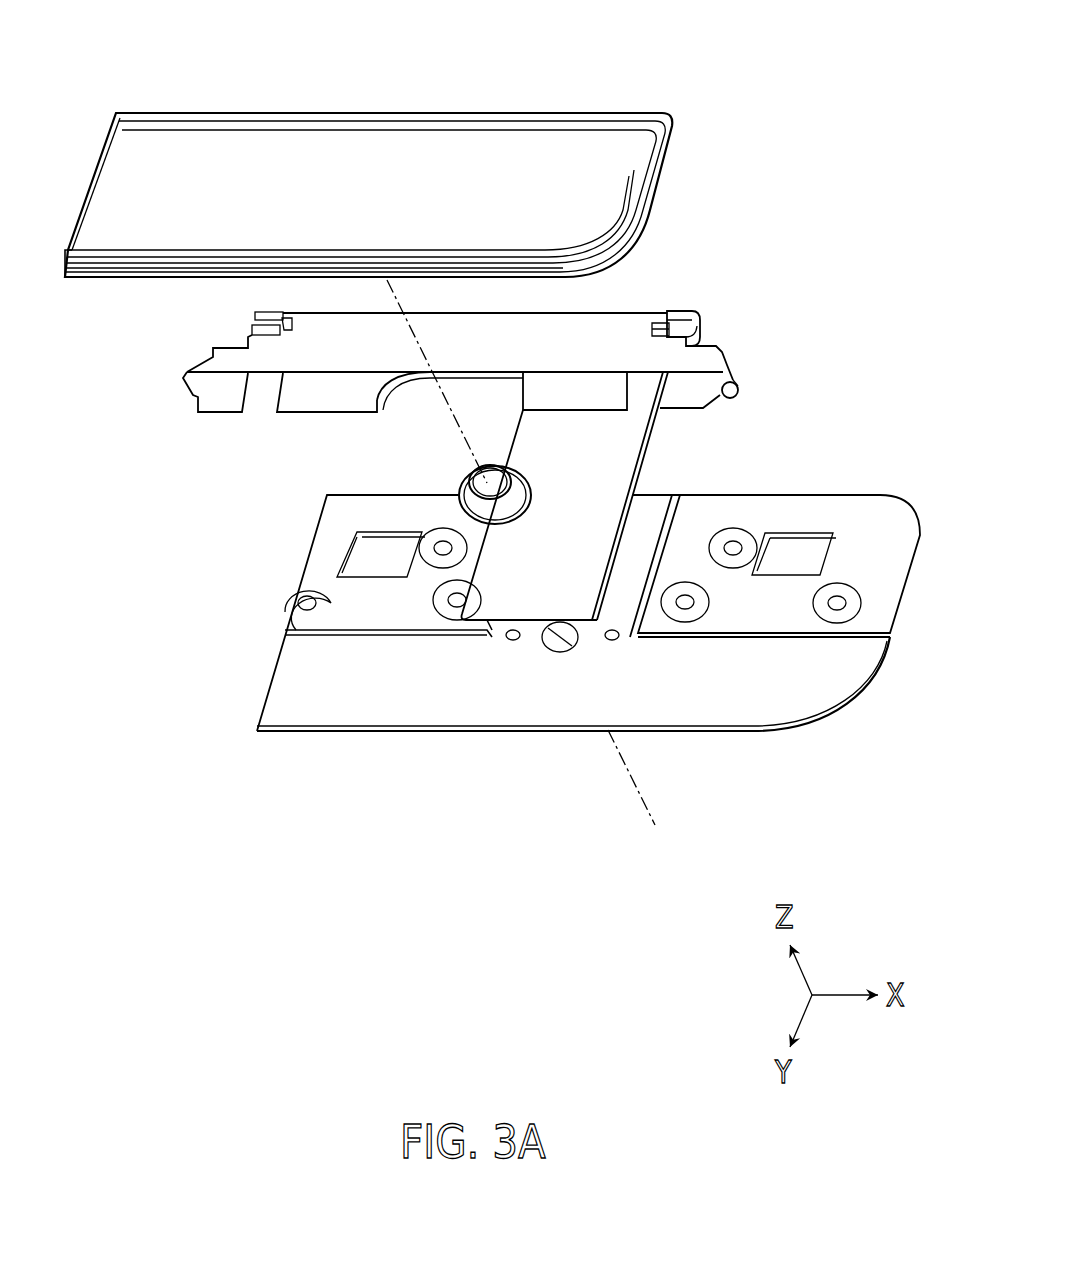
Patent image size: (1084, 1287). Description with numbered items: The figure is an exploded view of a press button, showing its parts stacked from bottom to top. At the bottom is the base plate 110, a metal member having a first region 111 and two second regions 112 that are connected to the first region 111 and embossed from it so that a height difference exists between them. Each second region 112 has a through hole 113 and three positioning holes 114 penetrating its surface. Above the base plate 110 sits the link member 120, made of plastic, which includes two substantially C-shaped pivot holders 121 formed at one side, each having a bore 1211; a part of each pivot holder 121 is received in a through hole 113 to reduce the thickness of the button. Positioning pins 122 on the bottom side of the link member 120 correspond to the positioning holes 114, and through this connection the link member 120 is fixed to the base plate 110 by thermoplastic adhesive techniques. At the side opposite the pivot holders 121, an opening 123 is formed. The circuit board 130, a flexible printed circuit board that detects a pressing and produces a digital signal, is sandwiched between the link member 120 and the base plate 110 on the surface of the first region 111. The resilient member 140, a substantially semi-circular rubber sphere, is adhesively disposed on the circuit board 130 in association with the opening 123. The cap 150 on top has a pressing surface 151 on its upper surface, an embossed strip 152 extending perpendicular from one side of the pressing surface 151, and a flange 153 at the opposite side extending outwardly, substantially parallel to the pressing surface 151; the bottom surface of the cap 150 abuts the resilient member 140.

The base plate 110 is at (594, 598).
The first region 111 is at (806, 686).
The second region 112 is at (781, 589).
The through hole 113 is at (805, 545).
The positioning hole 114 is at (836, 598).
The link member 120 is at (521, 338).
The pivot holder 121 is at (680, 313).
The bore 1211 is at (698, 333).
The positioning pin 122 is at (738, 382).
The opening 123 is at (408, 404).
The circuit board 130 is at (665, 453).
The resilient member 140 is at (458, 477).
The cap 150 is at (438, 206).
The pressing surface 151 is at (315, 155).
The embossed strip 152 is at (602, 113).
The flange 153 is at (104, 270).